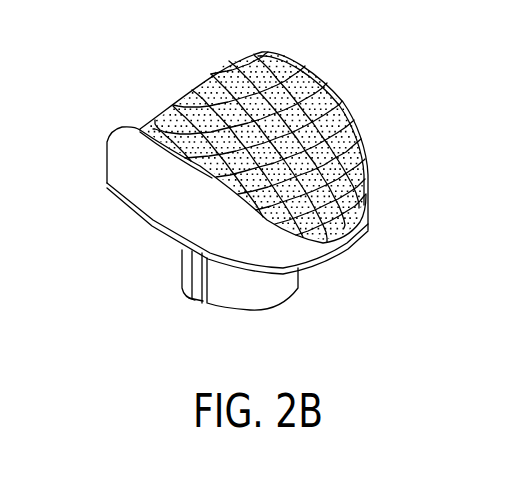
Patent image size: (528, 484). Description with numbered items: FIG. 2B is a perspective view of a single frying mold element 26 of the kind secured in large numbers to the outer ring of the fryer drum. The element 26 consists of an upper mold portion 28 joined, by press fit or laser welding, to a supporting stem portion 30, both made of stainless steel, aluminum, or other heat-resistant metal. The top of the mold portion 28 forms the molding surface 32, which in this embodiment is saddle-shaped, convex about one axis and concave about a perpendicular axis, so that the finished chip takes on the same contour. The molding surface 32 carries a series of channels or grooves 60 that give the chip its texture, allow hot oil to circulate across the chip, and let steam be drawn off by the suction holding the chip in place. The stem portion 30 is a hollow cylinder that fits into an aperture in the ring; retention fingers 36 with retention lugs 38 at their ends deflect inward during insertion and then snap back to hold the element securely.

The frying mold element 26 is at (264, 182).
The mold portion 28 is at (116, 163).
The stem portion 30 is at (287, 290).
The molding surface 32 is at (222, 78).
The retention finger 36 is at (200, 275).
The retention lug 38 is at (202, 302).
The grooves 60 is at (303, 83).